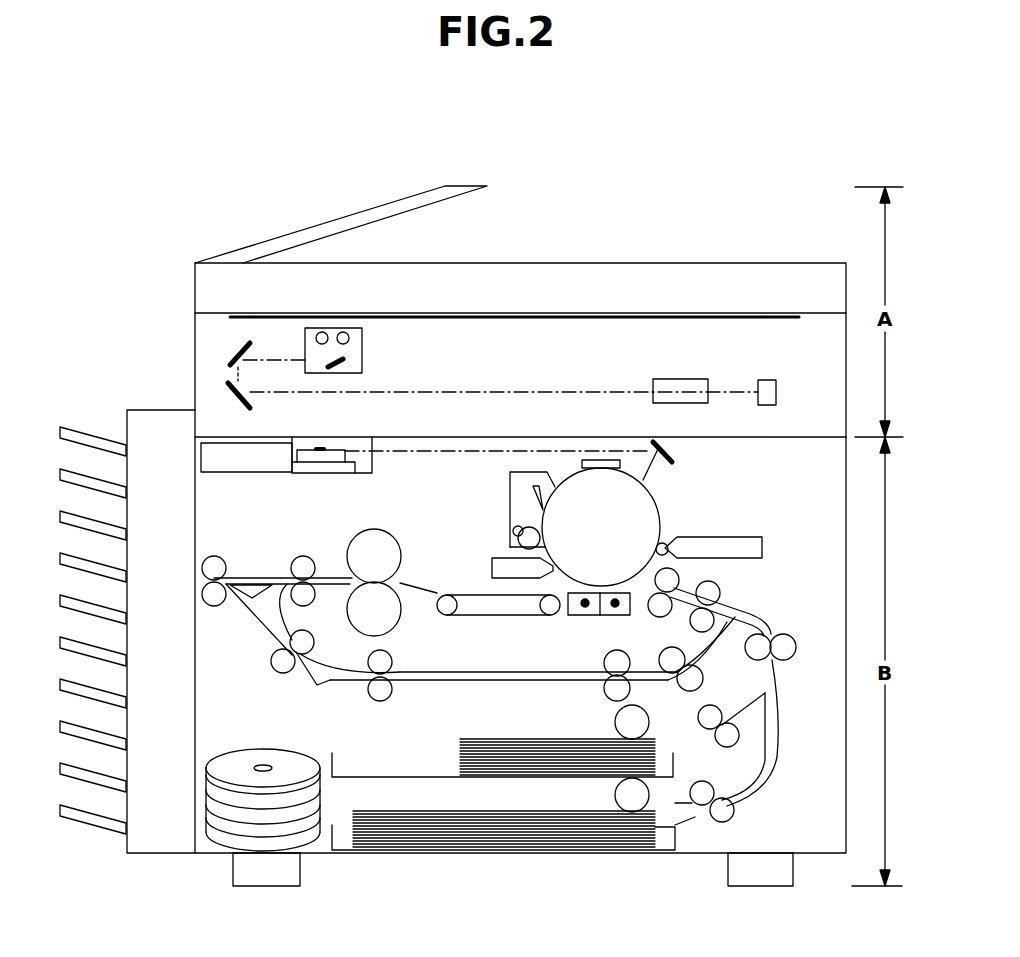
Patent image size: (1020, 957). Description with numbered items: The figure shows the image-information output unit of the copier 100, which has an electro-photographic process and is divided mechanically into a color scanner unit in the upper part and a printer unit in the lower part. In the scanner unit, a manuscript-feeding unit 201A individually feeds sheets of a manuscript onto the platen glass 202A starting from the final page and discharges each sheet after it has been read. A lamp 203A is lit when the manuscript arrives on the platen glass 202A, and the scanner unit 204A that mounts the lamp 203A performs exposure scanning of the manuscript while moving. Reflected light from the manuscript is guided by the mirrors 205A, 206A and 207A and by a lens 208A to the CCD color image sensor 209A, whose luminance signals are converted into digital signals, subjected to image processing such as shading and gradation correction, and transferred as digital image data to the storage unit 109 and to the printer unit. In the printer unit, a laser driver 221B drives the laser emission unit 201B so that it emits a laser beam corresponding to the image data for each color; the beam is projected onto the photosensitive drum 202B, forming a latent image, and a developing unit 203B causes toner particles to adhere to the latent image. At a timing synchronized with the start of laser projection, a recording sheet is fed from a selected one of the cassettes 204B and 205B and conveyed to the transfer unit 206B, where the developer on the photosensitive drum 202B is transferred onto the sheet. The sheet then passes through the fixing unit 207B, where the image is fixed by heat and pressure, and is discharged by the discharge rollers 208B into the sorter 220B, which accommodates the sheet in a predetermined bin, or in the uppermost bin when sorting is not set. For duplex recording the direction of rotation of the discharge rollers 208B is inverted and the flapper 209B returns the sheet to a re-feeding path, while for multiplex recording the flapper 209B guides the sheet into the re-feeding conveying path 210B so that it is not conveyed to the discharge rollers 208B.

The copier 100 is at (612, 172).
The manuscript-feeding unit 201A is at (342, 217).
The platen glass 202A is at (729, 314).
The lamp 203A is at (343, 331).
The scanner unit 204A is at (362, 350).
The mirror 205A is at (340, 366).
The mirror 206A is at (235, 350).
The mirror 207A is at (232, 394).
The lens 208A is at (680, 379).
The CCD color image sensor 209A is at (767, 380).
The laser emission unit 201B is at (308, 448).
The laser driver 221B is at (305, 488).
The photosensitive drum 202B is at (658, 500).
The developing unit 203B is at (762, 537).
The cassette 204B is at (545, 738).
The cassette 205B is at (375, 810).
The transfer unit 206B is at (595, 617).
The fixing unit 207B is at (408, 523).
The discharge rollers 208B is at (249, 516).
The flapper 209B is at (255, 594).
The re-feeding conveying path 210B is at (432, 685).
The storage unit 109 is at (265, 748).
The sorter 220B is at (167, 853).